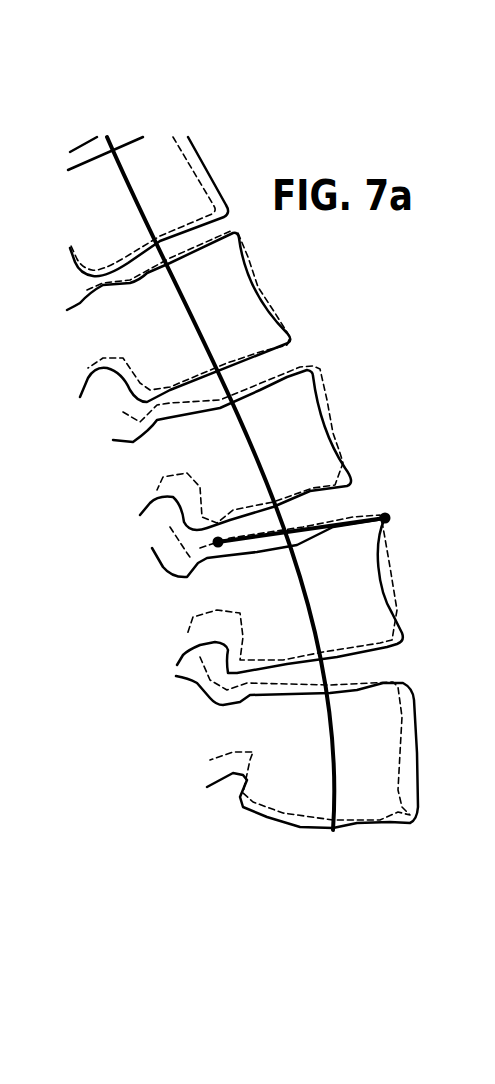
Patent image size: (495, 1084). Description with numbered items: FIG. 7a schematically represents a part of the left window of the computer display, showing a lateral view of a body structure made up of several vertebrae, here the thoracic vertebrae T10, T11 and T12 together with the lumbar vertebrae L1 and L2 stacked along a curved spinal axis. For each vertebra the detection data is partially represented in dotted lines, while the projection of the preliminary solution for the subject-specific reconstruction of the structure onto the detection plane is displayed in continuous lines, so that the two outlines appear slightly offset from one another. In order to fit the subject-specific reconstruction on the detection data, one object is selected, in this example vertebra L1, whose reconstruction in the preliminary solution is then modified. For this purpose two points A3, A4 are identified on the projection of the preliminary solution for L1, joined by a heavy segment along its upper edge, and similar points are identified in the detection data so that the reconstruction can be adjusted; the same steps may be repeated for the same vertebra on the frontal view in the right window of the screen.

The tenth thoracic vertebra T10 is at (149, 206).
The eleventh thoracic vertebra T11 is at (178, 316).
The twelfth thoracic vertebra T12 is at (232, 448).
The vertebra L1 is at (277, 594).
The second lumbar vertebra L2 is at (297, 742).
The point A3 is at (214, 545).
The point A4 is at (387, 514).